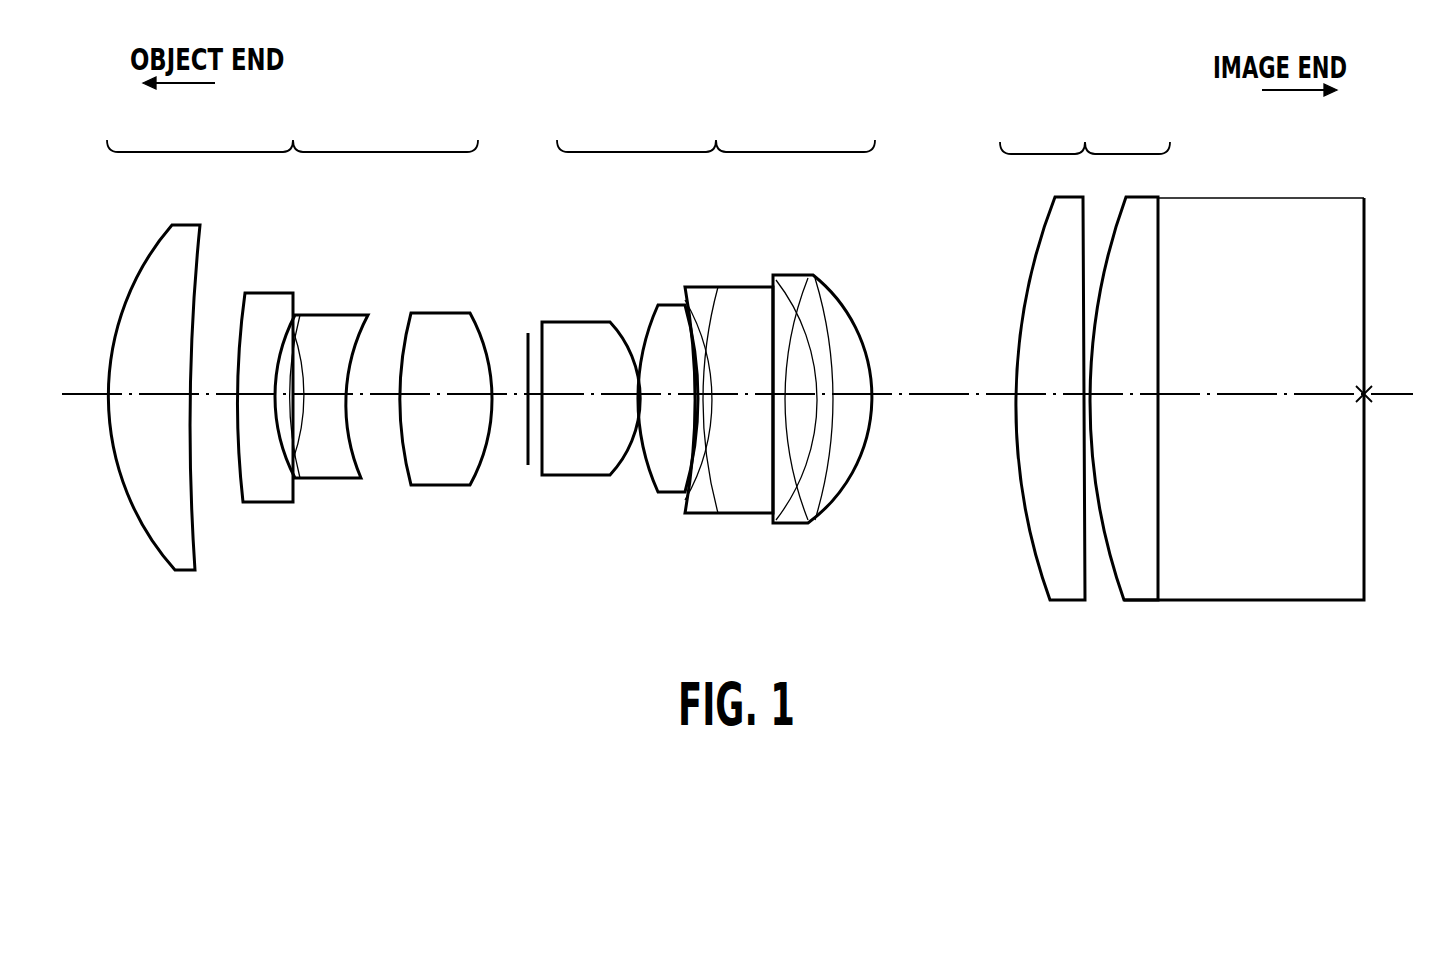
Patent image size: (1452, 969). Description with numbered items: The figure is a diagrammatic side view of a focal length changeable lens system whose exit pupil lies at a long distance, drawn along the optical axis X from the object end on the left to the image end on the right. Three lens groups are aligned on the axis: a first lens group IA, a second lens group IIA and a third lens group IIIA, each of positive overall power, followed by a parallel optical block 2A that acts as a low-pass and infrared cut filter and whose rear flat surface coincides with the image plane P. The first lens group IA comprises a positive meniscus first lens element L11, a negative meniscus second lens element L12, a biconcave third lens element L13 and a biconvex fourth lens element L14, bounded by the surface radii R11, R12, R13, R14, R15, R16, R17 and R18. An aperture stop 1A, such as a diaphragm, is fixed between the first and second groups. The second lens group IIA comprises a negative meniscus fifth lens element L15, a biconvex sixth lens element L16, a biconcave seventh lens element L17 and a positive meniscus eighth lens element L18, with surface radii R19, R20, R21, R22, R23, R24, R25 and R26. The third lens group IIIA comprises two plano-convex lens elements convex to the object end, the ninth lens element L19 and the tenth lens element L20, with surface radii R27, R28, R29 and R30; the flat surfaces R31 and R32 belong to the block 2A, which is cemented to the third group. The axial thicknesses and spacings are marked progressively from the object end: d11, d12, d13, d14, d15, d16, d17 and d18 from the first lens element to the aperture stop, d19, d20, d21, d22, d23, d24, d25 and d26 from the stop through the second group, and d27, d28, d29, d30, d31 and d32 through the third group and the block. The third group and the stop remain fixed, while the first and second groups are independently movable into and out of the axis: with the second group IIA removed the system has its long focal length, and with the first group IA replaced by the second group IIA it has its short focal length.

The first lens element L11 is at (183, 226).
The second lens element L12 is at (262, 294).
The third lens element L13 is at (350, 313).
The fourth lens element L14 is at (437, 314).
The fifth lens element L15 is at (593, 322).
The sixth lens element L16 is at (670, 305).
The seventh lens element L17 is at (740, 287).
The eighth lens element L18 is at (806, 270).
The ninth lens element L19 is at (1033, 238).
The tenth lens element L20 is at (1141, 223).
The lens surface radius R11 is at (138, 520).
The lens surface radius R12 is at (200, 558).
The lens surface radius R13 is at (242, 488).
The lens surface radius R14 is at (305, 480).
The lens surface radius R15 is at (328, 478).
The lens surface radius R16 is at (364, 470).
The lens surface radius R17 is at (400, 458).
The lens surface radius R18 is at (483, 476).
The lens surface radius R19 is at (542, 440).
The lens surface radius R20 is at (620, 470).
The lens surface radius R21 is at (648, 474).
The lens surface radius R22 is at (688, 470).
The lens surface radius R23 is at (710, 424).
The lens surface radius R24 is at (777, 476).
The lens surface radius R25 is at (795, 462).
The lens surface radius R26 is at (858, 467).
The lens surface radius R27 is at (1029, 535).
The lens surface radius R28 is at (1089, 588).
The lens surface radius R29 is at (1107, 592).
The lens surface radius R30 is at (1162, 582).
The lens surface radius R31 is at (1163, 530).
The lens surface radius R32 is at (1364, 548).
The axial distance d11 is at (153, 391).
The axial distance d12 is at (207, 392).
The axial distance d13 is at (252, 395).
The axial distance d14 is at (322, 315).
The axial distance d15 is at (335, 393).
The axial distance d16 is at (378, 393).
The axial distance d17 is at (430, 393).
The axial distance d18 is at (491, 414).
The axial distance d19 is at (543, 392).
The axial distance d20 is at (613, 393).
The axial distance d21 is at (642, 393).
The axial distance d22 is at (665, 393).
The axial distance d23 is at (708, 393).
The axial distance d24 is at (737, 393).
The axial distance d25 is at (803, 273).
The axial distance d26 is at (833, 352).
The axial distance d27 is at (908, 393).
The axial distance d28 is at (1033, 393).
The axial distance d29 is at (1090, 390).
The axial distance d30 is at (1118, 400).
The axial distance d31 is at (1160, 395).
The axial distance d32 is at (1281, 393).
The aperture stop 1A is at (522, 335).
The parallel optical block 2A is at (1336, 206).
The optical axis X is at (972, 390).
The image plane P is at (1372, 393).
The first lens group IA is at (292, 130).
The second lens group IIA is at (716, 130).
The third lens group IIIA is at (1085, 132).